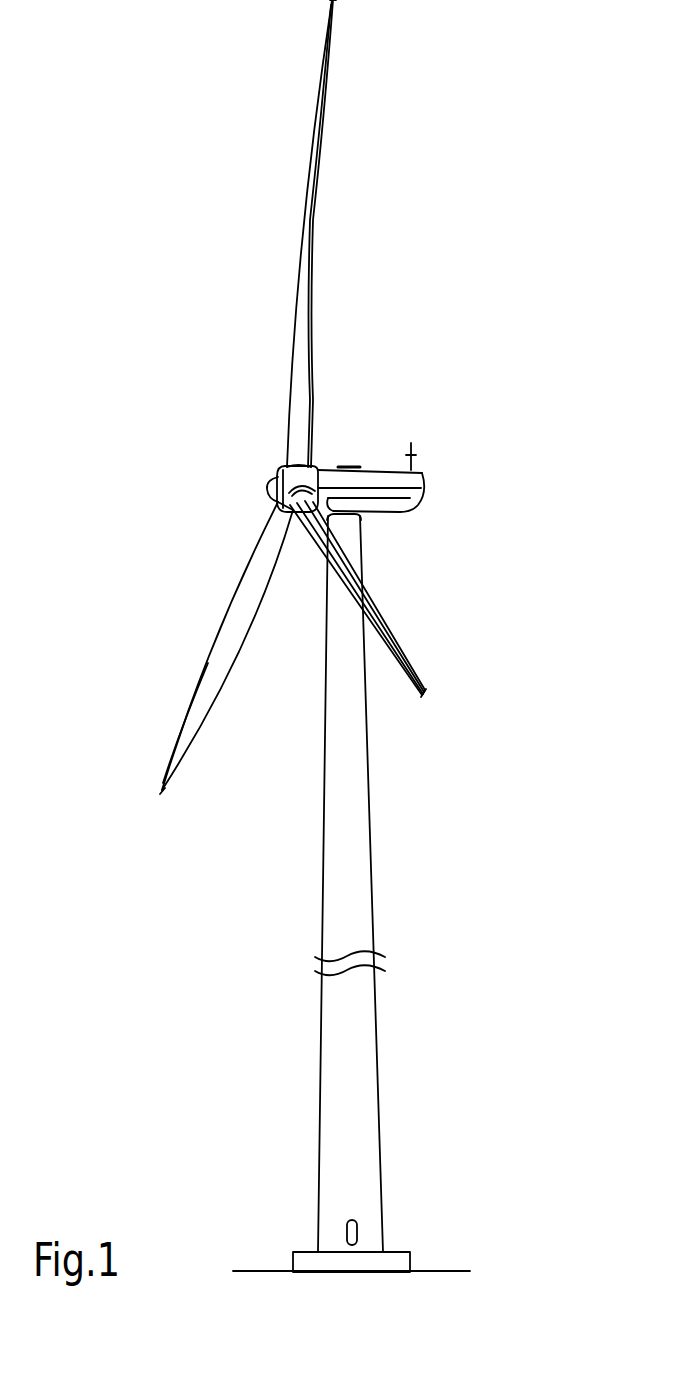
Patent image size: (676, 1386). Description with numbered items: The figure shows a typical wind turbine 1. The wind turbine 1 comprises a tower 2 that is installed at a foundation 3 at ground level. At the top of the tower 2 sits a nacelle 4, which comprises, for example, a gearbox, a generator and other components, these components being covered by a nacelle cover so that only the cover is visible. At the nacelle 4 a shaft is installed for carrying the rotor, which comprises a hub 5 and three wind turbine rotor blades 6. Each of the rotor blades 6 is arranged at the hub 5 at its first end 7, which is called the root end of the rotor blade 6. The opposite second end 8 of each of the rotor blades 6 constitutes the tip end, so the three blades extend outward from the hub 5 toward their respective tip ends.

The wind turbine 1 is at (128, 400).
The tower 2 is at (355, 858).
The foundation 3 is at (402, 1263).
The nacelle 4 is at (401, 504).
The hub 5 is at (273, 468).
The wind turbine rotor blade 6 is at (300, 316).
The first end 7 is at (311, 460).
The second end 8 is at (334, 1).